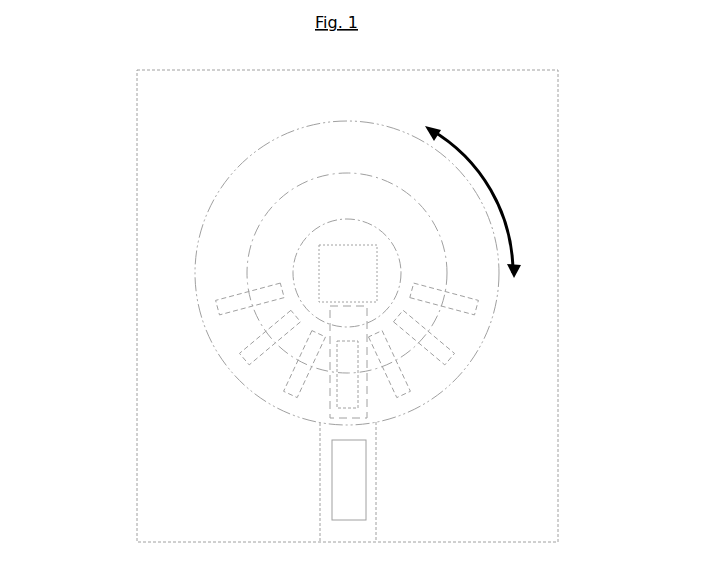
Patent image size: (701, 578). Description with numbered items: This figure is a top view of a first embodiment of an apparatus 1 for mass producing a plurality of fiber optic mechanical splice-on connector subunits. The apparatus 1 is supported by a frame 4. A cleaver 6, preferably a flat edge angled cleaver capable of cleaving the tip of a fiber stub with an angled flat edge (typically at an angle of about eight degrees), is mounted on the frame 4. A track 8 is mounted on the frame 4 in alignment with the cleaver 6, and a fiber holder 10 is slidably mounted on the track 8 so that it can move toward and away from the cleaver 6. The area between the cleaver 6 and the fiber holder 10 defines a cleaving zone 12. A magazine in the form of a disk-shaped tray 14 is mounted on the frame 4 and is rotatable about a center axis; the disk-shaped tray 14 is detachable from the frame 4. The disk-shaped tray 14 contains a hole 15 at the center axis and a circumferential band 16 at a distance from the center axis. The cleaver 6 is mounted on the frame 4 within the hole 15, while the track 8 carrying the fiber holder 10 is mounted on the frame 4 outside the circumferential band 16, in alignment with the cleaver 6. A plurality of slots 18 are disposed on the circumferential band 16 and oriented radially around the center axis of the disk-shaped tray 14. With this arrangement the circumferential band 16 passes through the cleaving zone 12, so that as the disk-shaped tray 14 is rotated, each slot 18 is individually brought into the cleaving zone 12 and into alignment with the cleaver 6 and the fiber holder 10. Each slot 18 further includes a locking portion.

The apparatus 1 is at (331, 306).
The frame 4 is at (386, 306).
The cleaver 6 is at (348, 273).
The track 8 is at (307, 482).
The fiber holder 10 is at (382, 480).
The cleaving zone 12 is at (418, 378).
The disk-shaped tray 14 is at (358, 253).
The hole 15 is at (347, 273).
The circumferential band 16 is at (347, 285).
The slots 18 is at (278, 396).